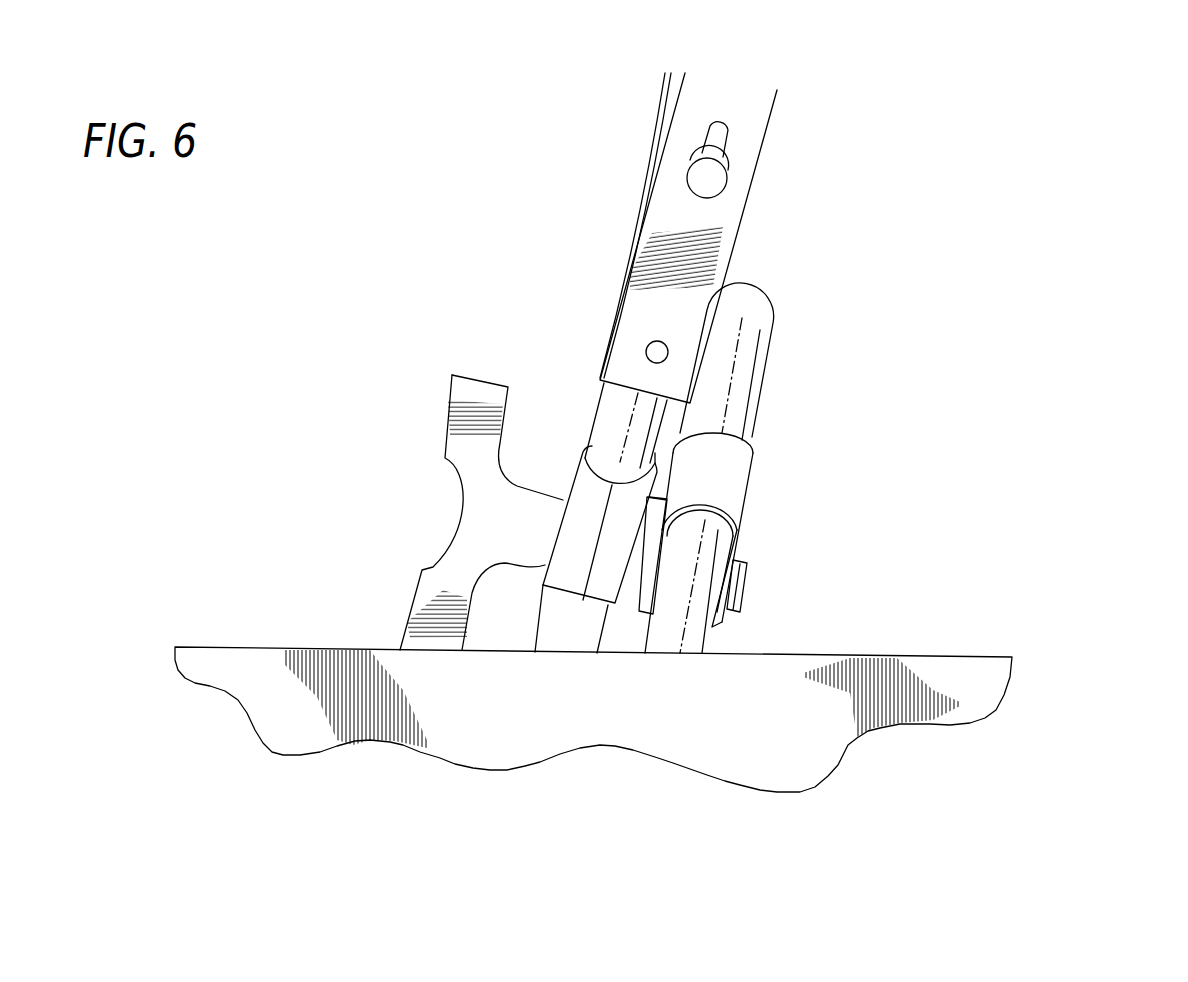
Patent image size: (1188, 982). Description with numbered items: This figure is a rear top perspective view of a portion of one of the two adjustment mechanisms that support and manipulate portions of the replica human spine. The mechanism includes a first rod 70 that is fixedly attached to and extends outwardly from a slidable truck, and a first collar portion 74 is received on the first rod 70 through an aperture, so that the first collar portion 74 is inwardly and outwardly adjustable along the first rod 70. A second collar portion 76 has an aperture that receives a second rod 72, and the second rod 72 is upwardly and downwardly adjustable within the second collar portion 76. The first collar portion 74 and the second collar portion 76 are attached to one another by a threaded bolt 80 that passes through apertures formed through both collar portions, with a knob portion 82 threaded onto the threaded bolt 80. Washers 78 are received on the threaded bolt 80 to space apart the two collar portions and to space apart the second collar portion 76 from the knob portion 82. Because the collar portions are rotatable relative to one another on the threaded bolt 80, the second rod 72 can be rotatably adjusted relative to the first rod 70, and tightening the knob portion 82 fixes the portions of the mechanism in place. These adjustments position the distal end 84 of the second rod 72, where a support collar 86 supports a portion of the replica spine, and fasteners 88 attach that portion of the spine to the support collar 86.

The first rod 70 is at (707, 642).
The second rod 72 is at (598, 419).
The first collar portion 74 is at (752, 478).
The second collar portion 76 is at (563, 550).
The washers 78 is at (643, 568).
The threaded bolt 80 is at (745, 590).
The knob portion 82 is at (407, 606).
The distal end 84 is at (623, 397).
The support collar 86 is at (707, 240).
The fasteners 88 is at (702, 180).